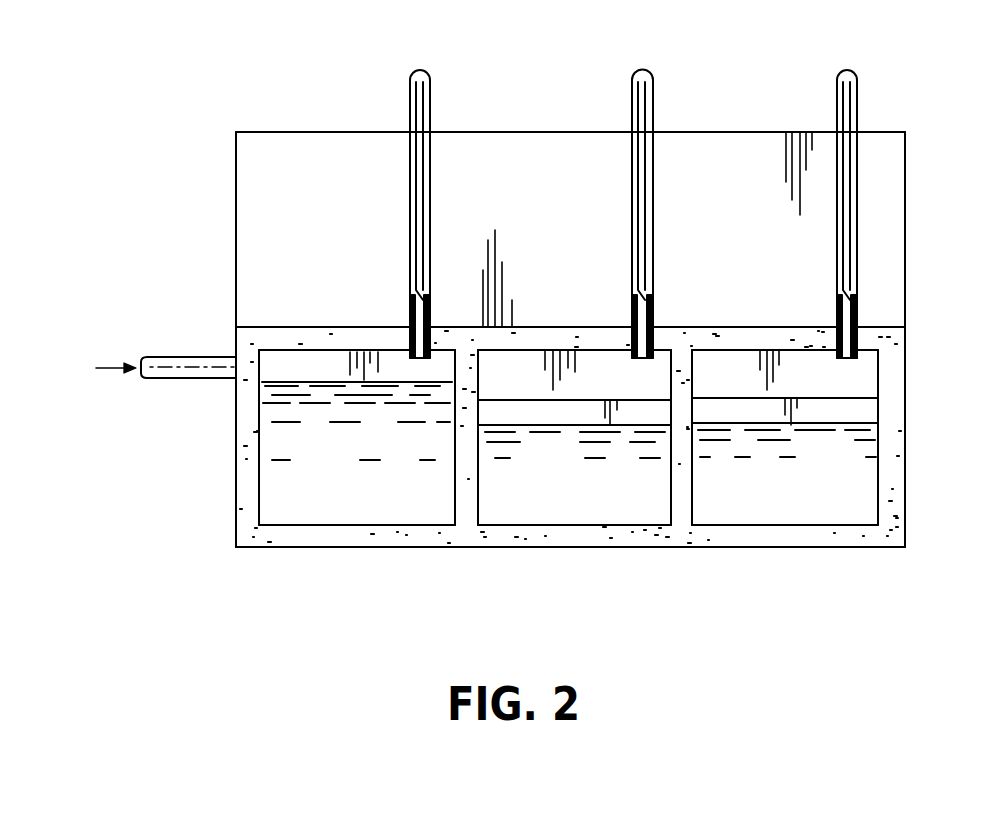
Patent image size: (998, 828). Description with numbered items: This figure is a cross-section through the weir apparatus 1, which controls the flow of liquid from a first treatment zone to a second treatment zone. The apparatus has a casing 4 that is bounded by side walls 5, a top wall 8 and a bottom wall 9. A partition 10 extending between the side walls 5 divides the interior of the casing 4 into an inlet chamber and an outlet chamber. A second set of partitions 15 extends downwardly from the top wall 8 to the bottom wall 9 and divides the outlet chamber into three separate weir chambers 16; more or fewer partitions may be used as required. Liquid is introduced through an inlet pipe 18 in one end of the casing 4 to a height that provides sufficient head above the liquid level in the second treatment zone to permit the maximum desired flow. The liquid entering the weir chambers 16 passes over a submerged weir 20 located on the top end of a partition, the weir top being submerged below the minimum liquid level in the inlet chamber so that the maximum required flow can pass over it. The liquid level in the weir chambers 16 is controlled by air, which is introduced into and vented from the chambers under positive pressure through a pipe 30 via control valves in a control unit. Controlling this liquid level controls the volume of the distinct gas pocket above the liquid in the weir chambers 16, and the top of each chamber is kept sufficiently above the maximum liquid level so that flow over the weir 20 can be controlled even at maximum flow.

The weir apparatus 1 is at (932, 350).
The casing 4 is at (906, 152).
The side walls 5 is at (238, 446).
The top wall 8 is at (688, 340).
The bottom wall 9 is at (690, 543).
The partition 10 is at (601, 364).
The partitions 15 is at (457, 503).
The weir chambers 16 is at (310, 354).
The inlet pipe 18 is at (170, 357).
The submerged weir 20 is at (538, 417).
The pipe 30 is at (432, 80).